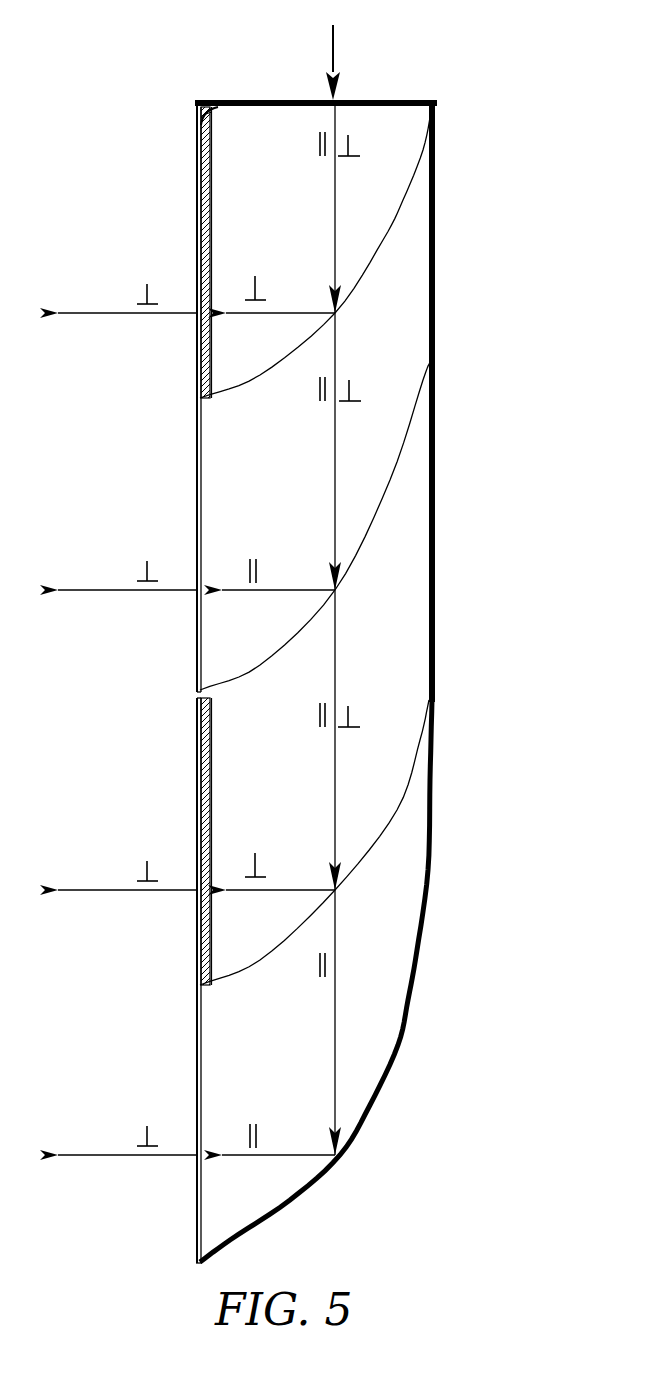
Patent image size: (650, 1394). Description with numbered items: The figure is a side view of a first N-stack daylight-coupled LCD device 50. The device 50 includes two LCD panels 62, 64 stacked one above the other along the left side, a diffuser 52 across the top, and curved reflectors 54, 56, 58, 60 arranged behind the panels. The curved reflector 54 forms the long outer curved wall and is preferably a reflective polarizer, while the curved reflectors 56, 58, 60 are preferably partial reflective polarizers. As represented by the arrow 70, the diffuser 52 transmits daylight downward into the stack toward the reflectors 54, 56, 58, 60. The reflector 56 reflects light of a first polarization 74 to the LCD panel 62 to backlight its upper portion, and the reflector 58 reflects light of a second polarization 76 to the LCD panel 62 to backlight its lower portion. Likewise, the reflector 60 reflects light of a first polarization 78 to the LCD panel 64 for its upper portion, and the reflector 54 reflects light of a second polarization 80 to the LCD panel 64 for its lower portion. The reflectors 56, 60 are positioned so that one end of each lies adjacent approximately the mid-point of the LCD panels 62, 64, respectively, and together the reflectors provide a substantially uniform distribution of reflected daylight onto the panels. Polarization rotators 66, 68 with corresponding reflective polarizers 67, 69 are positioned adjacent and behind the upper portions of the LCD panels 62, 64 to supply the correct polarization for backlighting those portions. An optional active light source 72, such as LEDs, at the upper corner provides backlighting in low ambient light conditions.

The first N-stack daylight-coupled LCD device 50 is at (441, 50).
The diffuser 52 is at (397, 99).
The curved reflector 54 is at (434, 868).
The curved reflector 56 is at (394, 238).
The curved reflector 58 is at (398, 464).
The curved reflector 60 is at (396, 808).
The LCD panel 62 is at (195, 455).
The LCD panel 64 is at (195, 1030).
The polarization rotator 66 is at (211, 172).
The reflective polarizer 67 is at (213, 208).
The polarization rotator 68 is at (213, 802).
The reflective polarizer 69 is at (211, 752).
The arrow 70 is at (331, 40).
The active light source 72 is at (199, 103).
The light of a first polarization 74 is at (294, 312).
The light of a second polarization 76 is at (296, 589).
The light of a first polarization 78 is at (294, 889).
The light of a second polarization 80 is at (294, 1154).